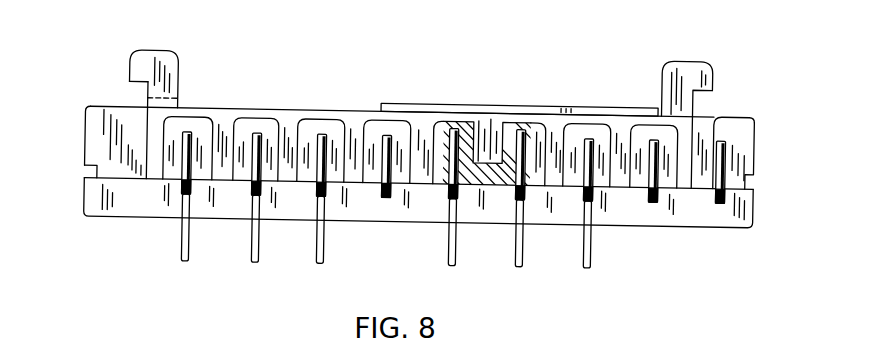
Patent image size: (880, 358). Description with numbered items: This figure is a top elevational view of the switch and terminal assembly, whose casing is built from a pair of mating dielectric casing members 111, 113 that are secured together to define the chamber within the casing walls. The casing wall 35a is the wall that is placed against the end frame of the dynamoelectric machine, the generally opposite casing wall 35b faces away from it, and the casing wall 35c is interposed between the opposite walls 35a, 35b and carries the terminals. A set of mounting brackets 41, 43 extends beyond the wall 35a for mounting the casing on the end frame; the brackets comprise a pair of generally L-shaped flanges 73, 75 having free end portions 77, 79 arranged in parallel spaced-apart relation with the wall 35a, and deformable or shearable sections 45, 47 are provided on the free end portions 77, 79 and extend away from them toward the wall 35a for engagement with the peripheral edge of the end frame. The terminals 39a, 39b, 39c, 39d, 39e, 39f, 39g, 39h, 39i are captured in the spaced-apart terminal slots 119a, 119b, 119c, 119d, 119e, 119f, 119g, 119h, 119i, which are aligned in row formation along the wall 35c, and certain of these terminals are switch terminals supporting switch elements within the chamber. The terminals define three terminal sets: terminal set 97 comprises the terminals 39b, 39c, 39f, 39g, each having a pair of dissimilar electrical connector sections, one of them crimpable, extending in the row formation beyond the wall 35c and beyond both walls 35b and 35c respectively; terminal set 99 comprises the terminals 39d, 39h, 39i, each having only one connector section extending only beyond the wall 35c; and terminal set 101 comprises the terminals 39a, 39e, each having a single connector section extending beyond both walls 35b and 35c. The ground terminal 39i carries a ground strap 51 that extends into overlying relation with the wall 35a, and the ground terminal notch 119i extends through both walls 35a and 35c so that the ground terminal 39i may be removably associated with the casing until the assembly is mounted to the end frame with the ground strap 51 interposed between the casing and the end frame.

The casing wall 35a is at (277, 112).
The casing wall 35b is at (125, 222).
The casing wall 35c is at (84, 195).
The casing member 111 is at (90, 223).
The casing member 113 is at (84, 136).
The mounting bracket 41 is at (136, 55).
The free end portion 77 is at (156, 55).
The L-shaped flange 73 is at (176, 78).
The deformable section 45 is at (128, 86).
The free end portion 79 is at (683, 57).
The L-shaped flange 75 is at (661, 70).
The mounting bracket 43 is at (705, 59).
The deformable section 47 is at (711, 86).
The ground strap 51 is at (538, 104).
The terminal 39a is at (182, 142).
The terminal 39b is at (240, 128).
The terminal 39c is at (312, 128).
The terminal 39d is at (370, 128).
The terminal 39e is at (443, 122).
The terminal 39f is at (503, 122).
The terminal 39g is at (570, 130).
The terminal 39h is at (638, 128).
The ground terminal 39i is at (723, 138).
The terminal slot 119a is at (182, 187).
The terminal slot 119b is at (252, 187).
The terminal slot 119c is at (317, 187).
The terminal slot 119d is at (382, 187).
The terminal slot 119e is at (449, 187).
The terminal slot 119f is at (516, 187).
The terminal slot 119g is at (584, 188).
The terminal slot 119h is at (649, 188).
The ground terminal notch 119i is at (716, 189).
The terminal set 101 is at (186, 266).
The terminal set 97 is at (256, 266).
The terminal set 99 is at (386, 199).